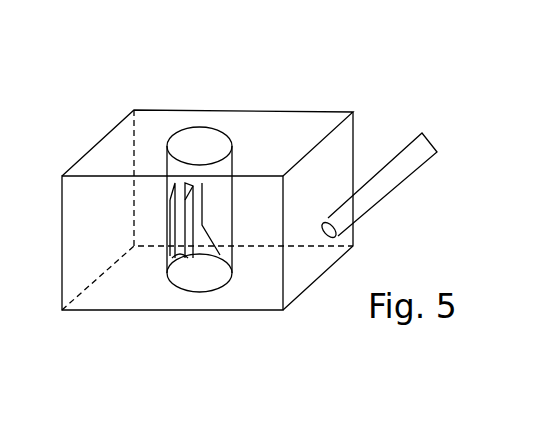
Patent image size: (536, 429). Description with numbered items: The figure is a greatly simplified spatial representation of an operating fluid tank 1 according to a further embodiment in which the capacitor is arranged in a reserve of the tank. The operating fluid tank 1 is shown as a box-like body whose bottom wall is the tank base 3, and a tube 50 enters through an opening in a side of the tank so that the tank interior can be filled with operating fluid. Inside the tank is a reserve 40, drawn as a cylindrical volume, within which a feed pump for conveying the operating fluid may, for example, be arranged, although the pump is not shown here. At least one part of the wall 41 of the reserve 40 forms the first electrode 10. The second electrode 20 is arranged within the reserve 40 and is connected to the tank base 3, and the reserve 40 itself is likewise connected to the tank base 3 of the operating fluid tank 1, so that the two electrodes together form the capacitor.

The operating fluid tank 1 is at (242, 214).
The tank base 3 is at (93, 300).
The reserve 40 is at (225, 188).
The second electrode 20 is at (212, 292).
The wall of the reserve 41 is at (158, 292).
The first electrode 10 is at (168, 258).
The tube 50 is at (415, 162).